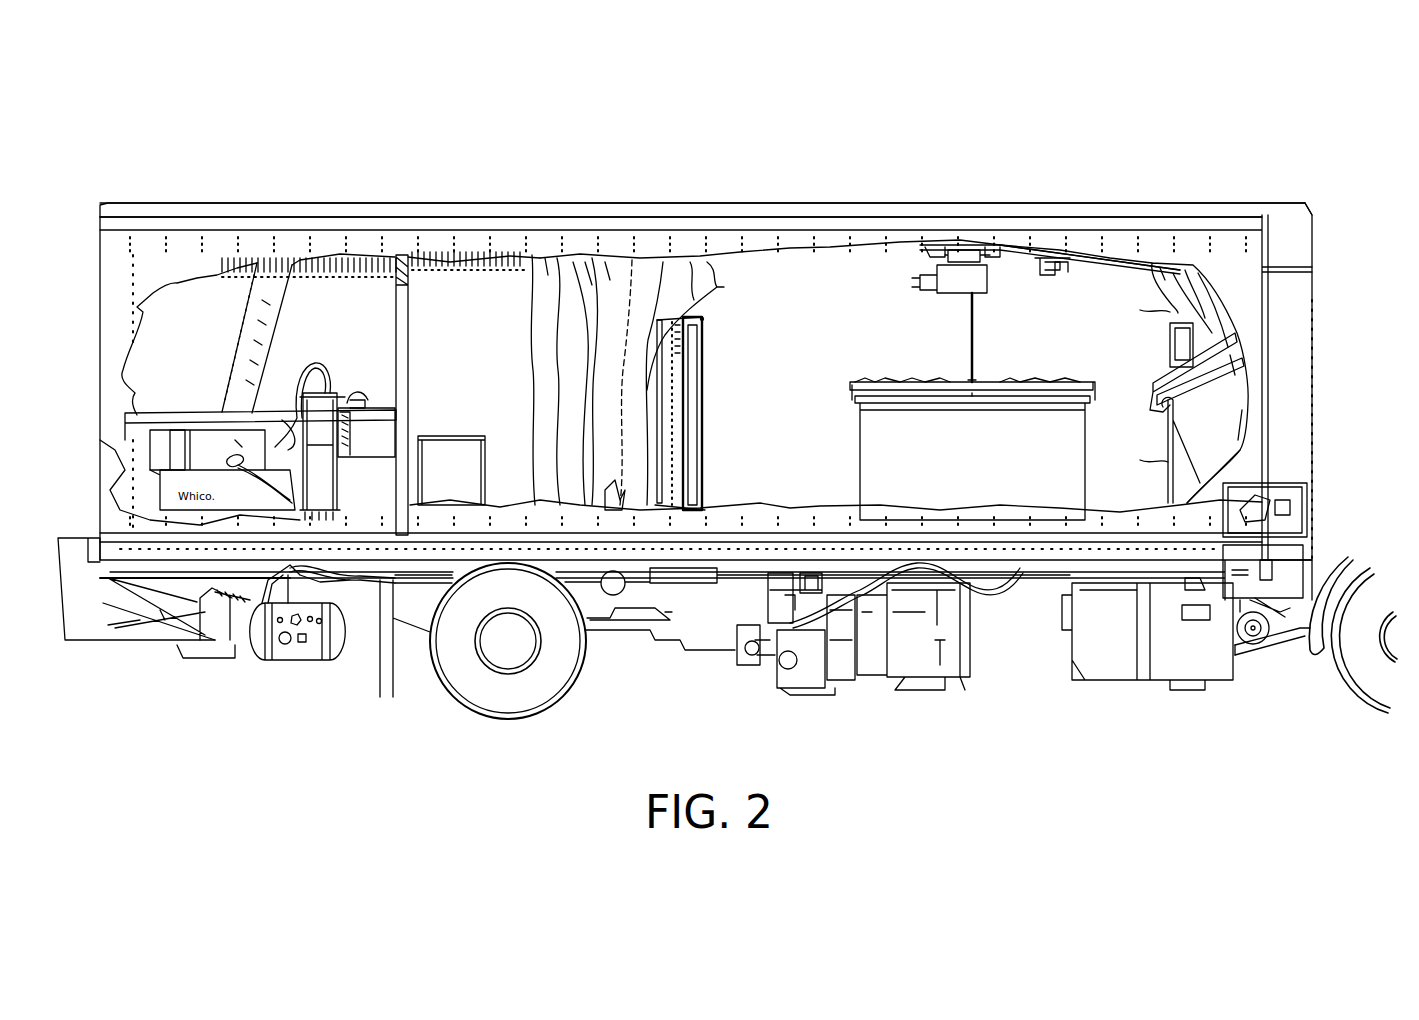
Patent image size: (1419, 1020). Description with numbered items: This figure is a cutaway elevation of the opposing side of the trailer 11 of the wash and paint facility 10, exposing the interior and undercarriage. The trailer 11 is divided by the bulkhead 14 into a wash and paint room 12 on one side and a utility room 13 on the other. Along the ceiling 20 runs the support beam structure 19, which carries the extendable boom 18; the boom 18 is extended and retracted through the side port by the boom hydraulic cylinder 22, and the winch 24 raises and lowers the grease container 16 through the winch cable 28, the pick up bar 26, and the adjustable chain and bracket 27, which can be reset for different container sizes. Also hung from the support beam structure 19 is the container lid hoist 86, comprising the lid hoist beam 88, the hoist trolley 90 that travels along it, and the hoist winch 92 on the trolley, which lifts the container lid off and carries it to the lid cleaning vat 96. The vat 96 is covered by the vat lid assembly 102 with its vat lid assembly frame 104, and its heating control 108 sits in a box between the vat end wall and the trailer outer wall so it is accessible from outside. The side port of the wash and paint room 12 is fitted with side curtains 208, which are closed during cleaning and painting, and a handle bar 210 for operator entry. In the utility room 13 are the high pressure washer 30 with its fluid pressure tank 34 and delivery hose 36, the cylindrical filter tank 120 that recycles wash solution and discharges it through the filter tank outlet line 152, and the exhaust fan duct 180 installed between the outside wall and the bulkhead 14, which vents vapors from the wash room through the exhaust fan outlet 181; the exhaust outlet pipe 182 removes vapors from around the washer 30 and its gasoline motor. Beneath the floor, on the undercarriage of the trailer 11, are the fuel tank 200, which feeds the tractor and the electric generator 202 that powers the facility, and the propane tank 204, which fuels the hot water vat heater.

The wash and paint facility 10 is at (872, 138).
The trailer 11 is at (330, 203).
The wash and paint room 12 is at (836, 376).
The utility room 13 is at (320, 389).
The bulkhead 14 is at (408, 323).
The grease container 16 is at (972, 451).
The extendable boom 18 is at (955, 245).
The support beam structure 19 is at (665, 400).
The ceiling 20 is at (1040, 215).
The boom hydraulic cylinder 22 is at (920, 256).
The winch 24 is at (952, 278).
The pick up bar 26 is at (950, 385).
The adjustable chain and bracket 27 is at (895, 382).
The winch cable 28 is at (975, 355).
The high pressure washer 30 is at (168, 432).
The fluid pressure tank 34 is at (222, 470).
The delivery hose 36 is at (262, 498).
The container lid hoist 86 is at (1100, 245).
The lid hoist beam 88 is at (1120, 277).
The hoist trolley 90 is at (1040, 262).
The hoist winch 92 is at (1074, 279).
The lid cleaning vat 96 is at (1213, 452).
The vat lid assembly 102 is at (1232, 347).
The vat lid assembly frame 104 is at (1168, 418).
The heating control 108 is at (1300, 499).
The filter tank 120 is at (334, 456).
The filter tank outlet line 152 is at (318, 363).
The exhaust fan duct 180 is at (366, 432).
The exhaust fan outlet 181 is at (452, 445).
The exhaust outlet pipe 182 is at (270, 304).
The fuel tank 200 is at (1104, 670).
The electric generator 202 is at (880, 670).
The propane tank 204 is at (285, 670).
The side curtains 208 is at (694, 290).
The handle bar 210 is at (705, 473).